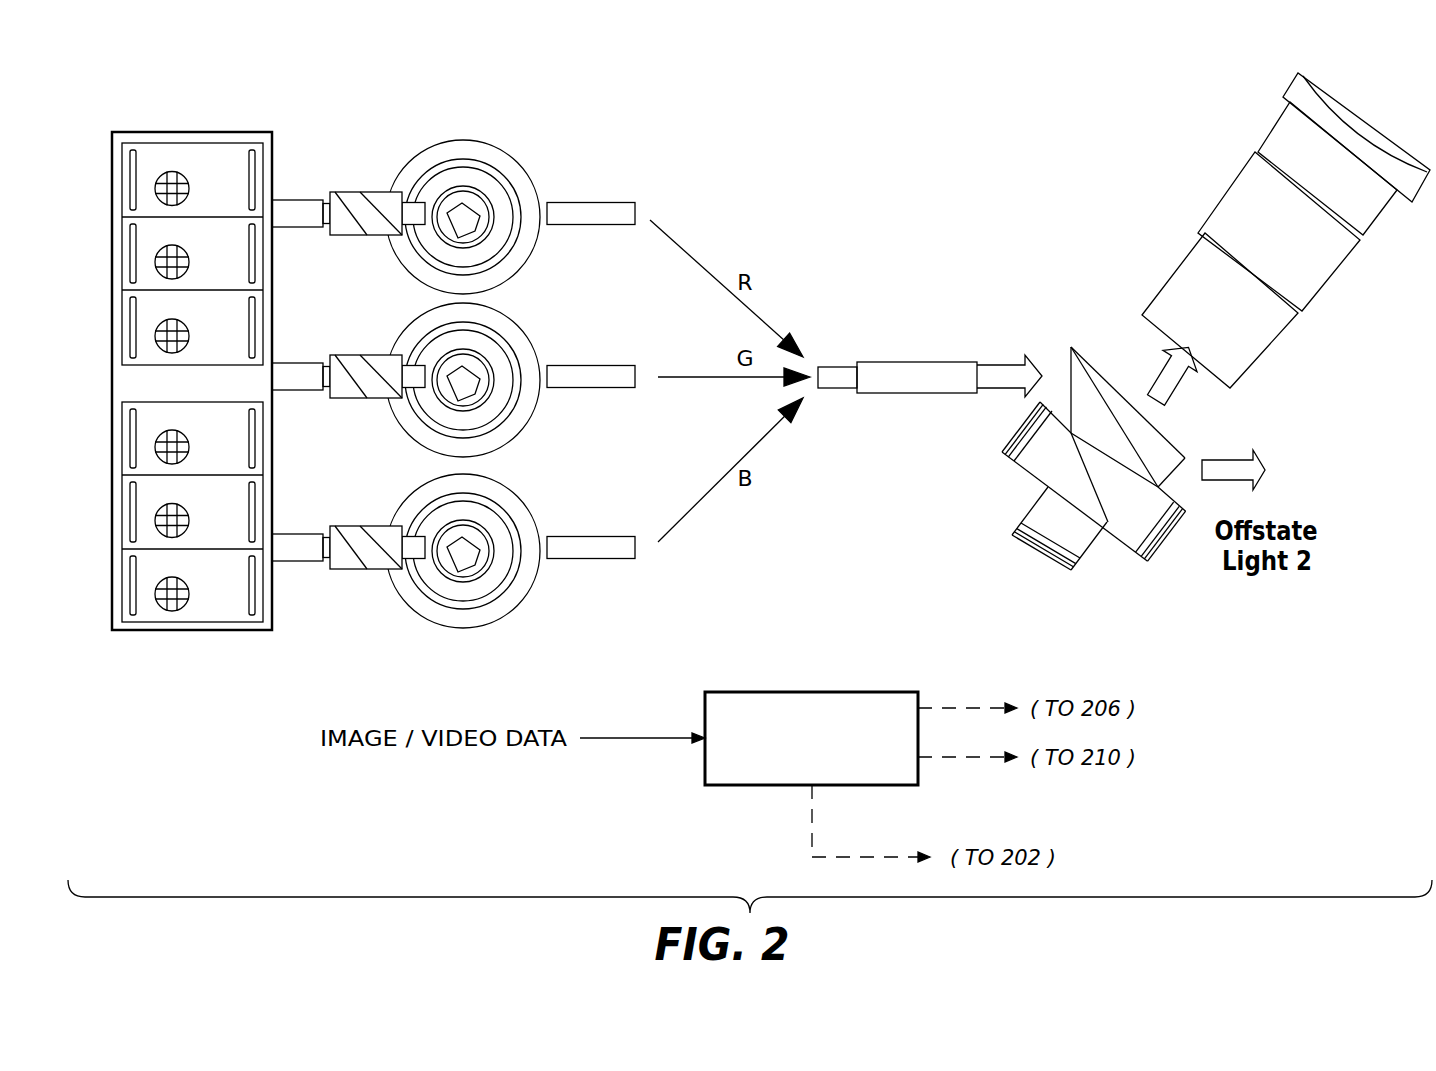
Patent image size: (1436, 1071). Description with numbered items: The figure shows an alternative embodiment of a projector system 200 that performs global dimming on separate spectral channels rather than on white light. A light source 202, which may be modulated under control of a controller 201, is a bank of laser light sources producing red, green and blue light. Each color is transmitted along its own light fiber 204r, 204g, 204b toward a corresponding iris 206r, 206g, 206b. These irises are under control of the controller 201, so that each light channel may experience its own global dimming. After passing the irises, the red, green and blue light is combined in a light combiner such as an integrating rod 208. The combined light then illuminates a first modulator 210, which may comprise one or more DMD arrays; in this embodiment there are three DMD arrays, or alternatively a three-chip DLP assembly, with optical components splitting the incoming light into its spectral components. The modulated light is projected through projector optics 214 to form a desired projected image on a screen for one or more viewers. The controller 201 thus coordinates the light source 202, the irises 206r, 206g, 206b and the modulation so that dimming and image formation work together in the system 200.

The projector system 200 is at (838, 100).
The controller 201 is at (860, 692).
The light source 202 is at (272, 123).
The light fiber 204r is at (342, 192).
The light fiber 204g is at (342, 355).
The light fiber 204b is at (342, 526).
The iris 206r is at (523, 165).
The iris 206g is at (523, 328).
The iris 206b is at (523, 499).
The integrating rod 208 is at (910, 362).
The first modulator 210 is at (1002, 586).
The projector optics 214 is at (1273, 127).